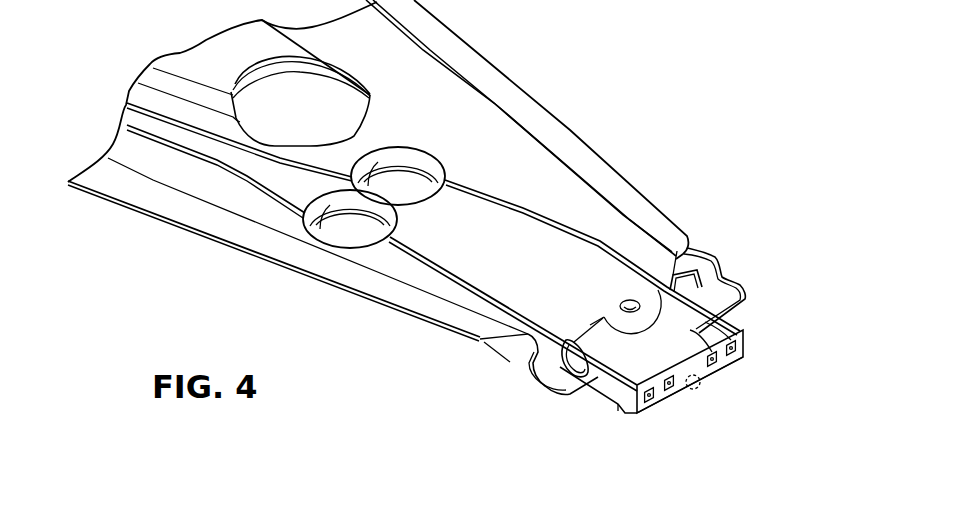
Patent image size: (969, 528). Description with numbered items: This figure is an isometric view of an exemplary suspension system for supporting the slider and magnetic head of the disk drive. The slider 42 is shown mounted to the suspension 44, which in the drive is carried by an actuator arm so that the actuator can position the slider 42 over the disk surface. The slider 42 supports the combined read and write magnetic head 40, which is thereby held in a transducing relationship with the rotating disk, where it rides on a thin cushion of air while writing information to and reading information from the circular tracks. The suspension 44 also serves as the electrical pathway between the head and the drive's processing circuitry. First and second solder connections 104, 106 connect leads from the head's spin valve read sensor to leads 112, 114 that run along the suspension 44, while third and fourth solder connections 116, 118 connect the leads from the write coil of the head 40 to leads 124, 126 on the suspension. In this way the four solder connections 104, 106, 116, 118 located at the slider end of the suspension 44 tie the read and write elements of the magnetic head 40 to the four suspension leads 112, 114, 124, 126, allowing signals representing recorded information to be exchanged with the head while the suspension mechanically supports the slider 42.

The magnetic head 40 is at (703, 392).
The slider 42 is at (581, 406).
The suspension 44 is at (549, 107).
The first solder connection 104 is at (632, 408).
The second solder connection 106 is at (740, 347).
The lead 112 is at (420, 257).
The lead 114 is at (601, 243).
The third solder connection 116 is at (662, 400).
The fourth solder connection 118 is at (722, 368).
The lead 124 is at (467, 274).
The lead 126 is at (523, 210).